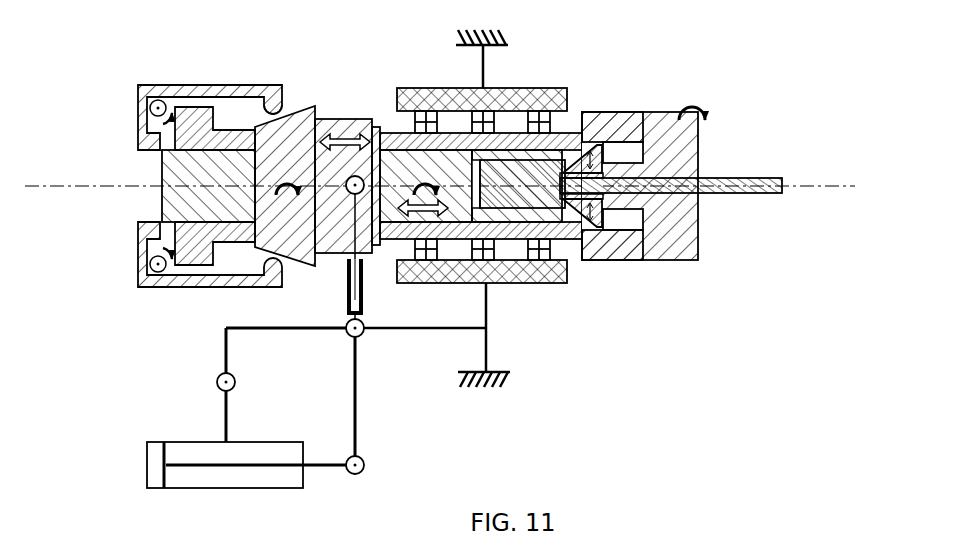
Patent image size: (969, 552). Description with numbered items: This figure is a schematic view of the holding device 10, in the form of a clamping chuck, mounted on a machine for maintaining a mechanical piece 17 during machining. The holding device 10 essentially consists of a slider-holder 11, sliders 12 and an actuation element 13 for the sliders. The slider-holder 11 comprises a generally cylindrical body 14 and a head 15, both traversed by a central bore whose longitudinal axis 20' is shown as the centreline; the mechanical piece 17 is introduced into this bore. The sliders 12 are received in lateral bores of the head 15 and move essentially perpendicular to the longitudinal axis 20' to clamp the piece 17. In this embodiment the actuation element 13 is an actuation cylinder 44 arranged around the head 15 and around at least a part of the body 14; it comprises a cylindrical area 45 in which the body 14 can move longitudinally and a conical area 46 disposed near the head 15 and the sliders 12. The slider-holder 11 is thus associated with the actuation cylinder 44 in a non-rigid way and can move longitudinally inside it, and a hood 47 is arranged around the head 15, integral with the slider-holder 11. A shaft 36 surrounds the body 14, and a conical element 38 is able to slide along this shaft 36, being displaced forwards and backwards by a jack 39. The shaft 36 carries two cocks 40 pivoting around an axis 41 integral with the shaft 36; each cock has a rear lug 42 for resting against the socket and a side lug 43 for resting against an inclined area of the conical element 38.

The holding device 10 is at (592, 104).
The slider-holder 11 is at (553, 160).
The sliders 12 is at (632, 118).
The actuation element 13 is at (455, 244).
The body 14 is at (523, 244).
The head 15 is at (603, 228).
The mechanical piece 17 is at (749, 177).
The longitudinal axis 20' is at (451, 156).
The shaft 36 is at (405, 237).
The conical element 38 is at (313, 117).
The jack 39 is at (152, 446).
The cocks 40 is at (183, 84).
The axis 41 is at (142, 92).
The rear lug 42 is at (155, 136).
The side lug 43 is at (266, 112).
The actuation cylinder 44 is at (527, 157).
The cylindrical area 45 is at (395, 160).
The conical area 46 is at (580, 234).
The hood 47 is at (698, 236).